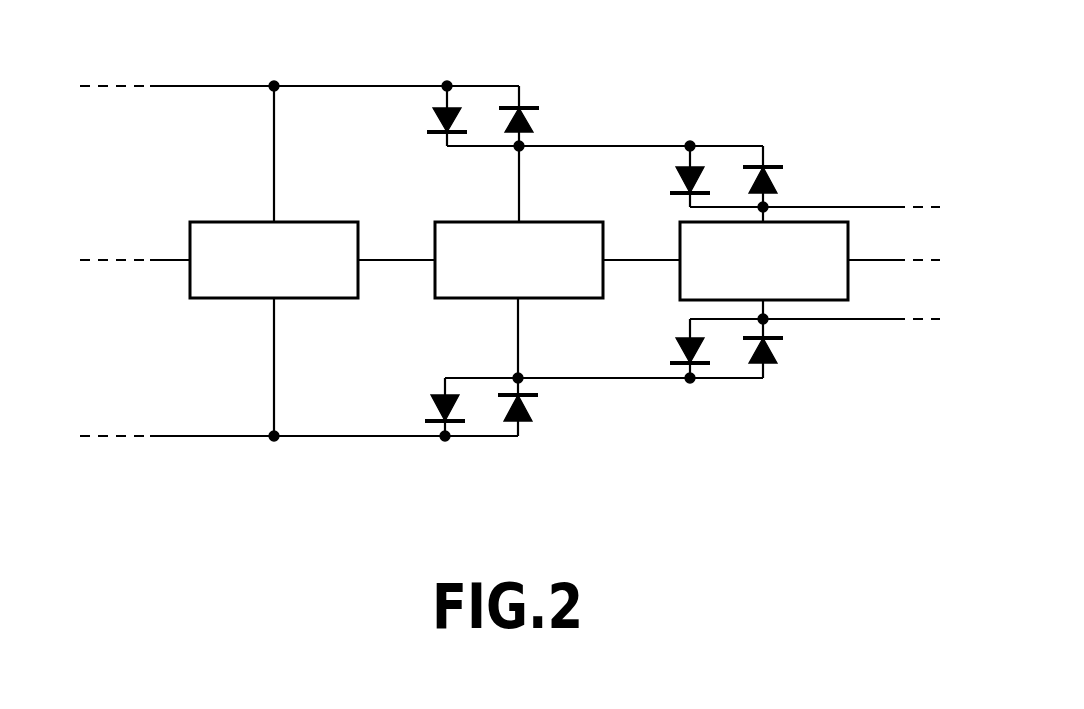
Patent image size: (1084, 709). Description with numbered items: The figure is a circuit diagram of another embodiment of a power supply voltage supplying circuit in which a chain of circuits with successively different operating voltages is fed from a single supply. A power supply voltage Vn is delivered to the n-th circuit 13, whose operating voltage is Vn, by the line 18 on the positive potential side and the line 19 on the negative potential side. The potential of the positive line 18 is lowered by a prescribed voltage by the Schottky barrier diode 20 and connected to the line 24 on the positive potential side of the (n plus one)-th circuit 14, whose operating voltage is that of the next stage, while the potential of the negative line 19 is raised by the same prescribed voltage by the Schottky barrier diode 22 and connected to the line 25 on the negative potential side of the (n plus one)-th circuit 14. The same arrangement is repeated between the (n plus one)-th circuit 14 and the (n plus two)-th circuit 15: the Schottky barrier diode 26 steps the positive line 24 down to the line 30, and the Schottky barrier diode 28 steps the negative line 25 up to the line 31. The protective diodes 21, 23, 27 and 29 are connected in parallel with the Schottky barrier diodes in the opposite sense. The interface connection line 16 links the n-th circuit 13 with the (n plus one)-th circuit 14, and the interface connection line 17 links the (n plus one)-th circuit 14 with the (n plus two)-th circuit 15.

The n-th circuit 13 is at (205, 225).
The (n+1)-th circuit 14 is at (445, 225).
The (n+2)-th circuit 15 is at (848, 245).
The interface connection line 16 is at (400, 260).
The interface connection line 17 is at (650, 260).
The line on the positive potential side 18 is at (190, 86).
The line on the negative potential side 19 is at (190, 437).
The Schottky barrier diode 20 is at (432, 113).
The protective diode 21 is at (537, 127).
The Schottky barrier diode 22 is at (432, 412).
The protective diode 23 is at (532, 422).
The line on the positive potential side of (n+1)-th circuit 24 is at (617, 147).
The line on the negative potential side of (n+1)-th circuit 25 is at (642, 378).
The Schottky barrier diode 26 is at (677, 175).
The protective diode 27 is at (780, 183).
The Schottky barrier diode 28 is at (672, 353).
The protective diode 29 is at (777, 363).
The line on the positive potential side of (n+2)-th circuit 30 is at (847, 207).
The line on the negative potential side of (n+2)-th circuit 31 is at (880, 319).